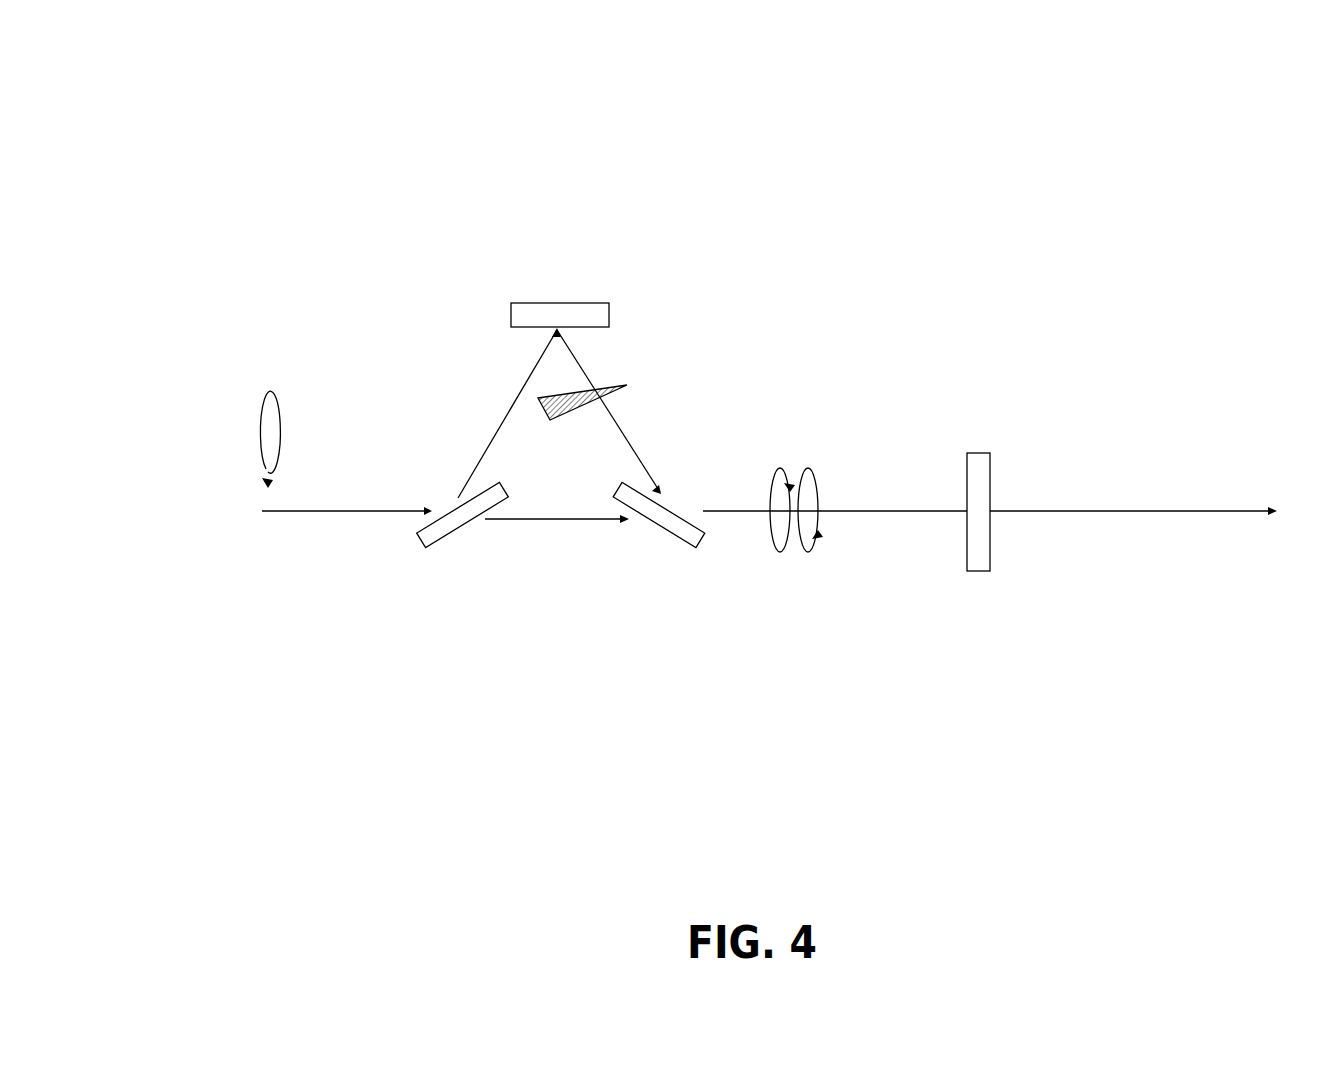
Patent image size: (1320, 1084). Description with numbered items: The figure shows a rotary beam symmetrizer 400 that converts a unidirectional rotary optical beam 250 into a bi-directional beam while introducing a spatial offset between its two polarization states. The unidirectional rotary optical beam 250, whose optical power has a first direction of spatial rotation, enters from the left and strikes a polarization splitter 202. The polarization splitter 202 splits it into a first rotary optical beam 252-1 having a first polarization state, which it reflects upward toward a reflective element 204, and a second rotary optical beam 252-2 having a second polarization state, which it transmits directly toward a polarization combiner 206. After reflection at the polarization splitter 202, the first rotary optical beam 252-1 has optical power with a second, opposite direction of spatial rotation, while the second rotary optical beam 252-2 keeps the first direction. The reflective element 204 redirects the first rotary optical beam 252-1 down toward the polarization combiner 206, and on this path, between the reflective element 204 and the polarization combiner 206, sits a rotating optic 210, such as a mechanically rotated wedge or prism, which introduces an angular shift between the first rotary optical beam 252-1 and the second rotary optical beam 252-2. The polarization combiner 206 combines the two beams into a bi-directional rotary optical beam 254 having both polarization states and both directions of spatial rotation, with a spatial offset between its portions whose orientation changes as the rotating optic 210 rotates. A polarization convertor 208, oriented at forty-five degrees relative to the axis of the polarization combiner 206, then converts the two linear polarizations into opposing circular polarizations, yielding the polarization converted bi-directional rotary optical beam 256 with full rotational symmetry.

The rotary beam symmetrizer 400 is at (226, 62).
The unidirectional rotary optical beam 250 is at (260, 560).
The polarization splitter 202 is at (463, 528).
The reflective element 204 is at (560, 296).
The polarization combiner 206 is at (659, 528).
The polarization convertor 208 is at (983, 531).
The rotating optic 210 is at (597, 387).
The first rotary optical beam 252-1 is at (491, 455).
The second rotary optical beam 252-2 is at (556, 530).
The bi-directional rotary optical beam 254 is at (799, 560).
The polarization converted bi-directional rotary optical beam 256 is at (1212, 520).